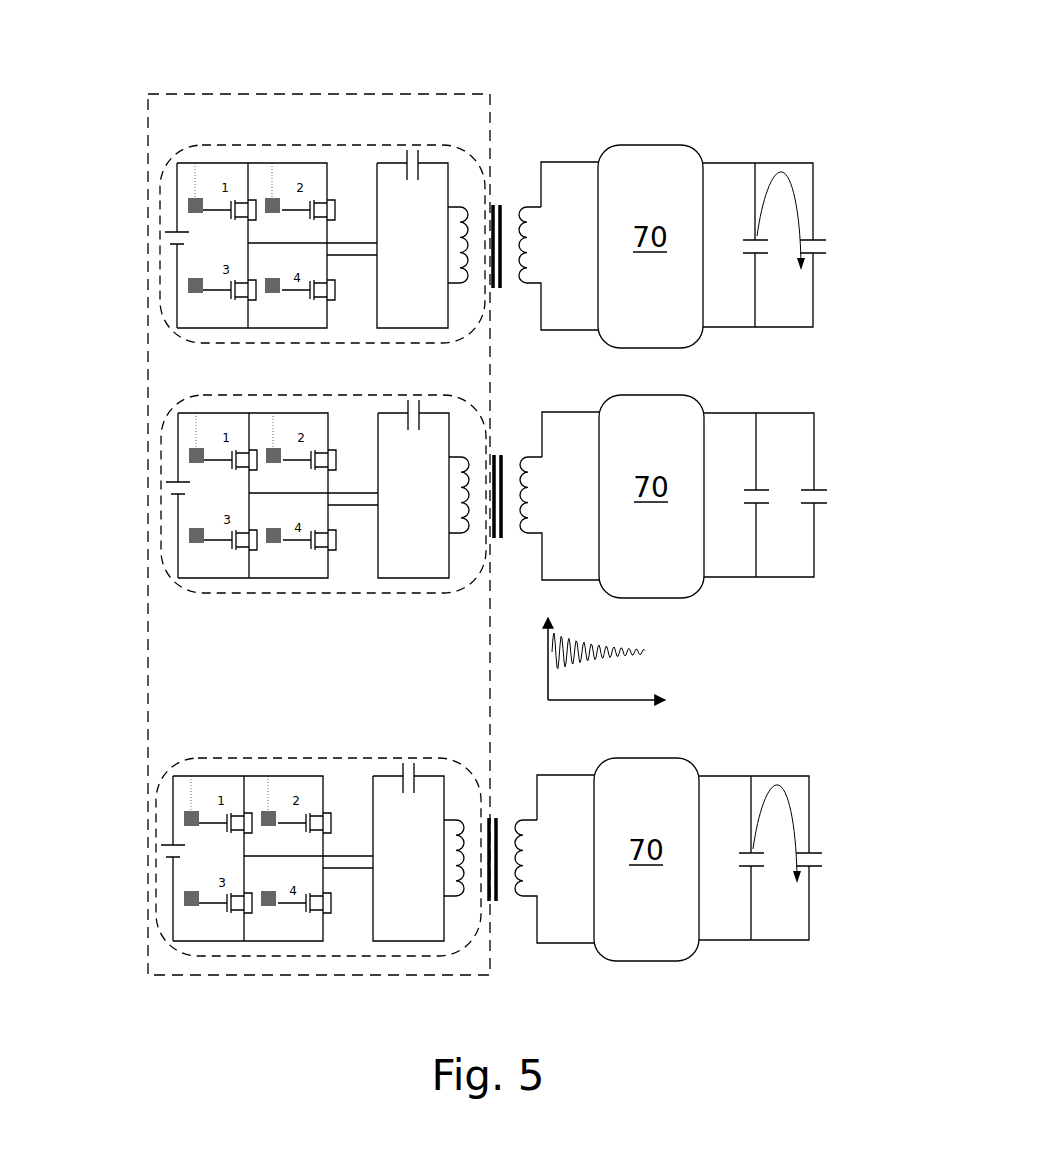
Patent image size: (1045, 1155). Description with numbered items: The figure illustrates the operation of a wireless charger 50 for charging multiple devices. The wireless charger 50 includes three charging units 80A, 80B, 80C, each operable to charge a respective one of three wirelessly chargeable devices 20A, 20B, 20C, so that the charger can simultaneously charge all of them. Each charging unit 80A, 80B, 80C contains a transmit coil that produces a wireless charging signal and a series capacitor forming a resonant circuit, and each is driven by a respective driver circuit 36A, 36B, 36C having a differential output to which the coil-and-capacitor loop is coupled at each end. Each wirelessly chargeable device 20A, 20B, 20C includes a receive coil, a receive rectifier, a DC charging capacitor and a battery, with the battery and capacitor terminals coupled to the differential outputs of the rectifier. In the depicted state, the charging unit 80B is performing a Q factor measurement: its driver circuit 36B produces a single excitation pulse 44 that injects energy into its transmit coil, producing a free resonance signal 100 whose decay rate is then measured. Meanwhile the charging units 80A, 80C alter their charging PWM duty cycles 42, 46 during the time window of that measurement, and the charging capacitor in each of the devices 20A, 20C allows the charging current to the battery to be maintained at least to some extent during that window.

The wireless charger 50 is at (174, 680).
The charging unit 80A is at (352, 158).
The charging unit 80B is at (350, 425).
The charging unit 80C is at (338, 775).
The driver circuit 36A is at (168, 210).
The driver circuit 36B is at (163, 468).
The driver circuit 36C is at (158, 830).
The duty cycle 42 is at (276, 178).
The pulse 44 is at (188, 432).
The duty cycle 46 is at (200, 791).
The wirelessly chargeable device 20A is at (727, 195).
The wirelessly chargeable device 20B is at (733, 458).
The wirelessly chargeable device 20C is at (725, 808).
The free resonance signal 100 is at (550, 665).